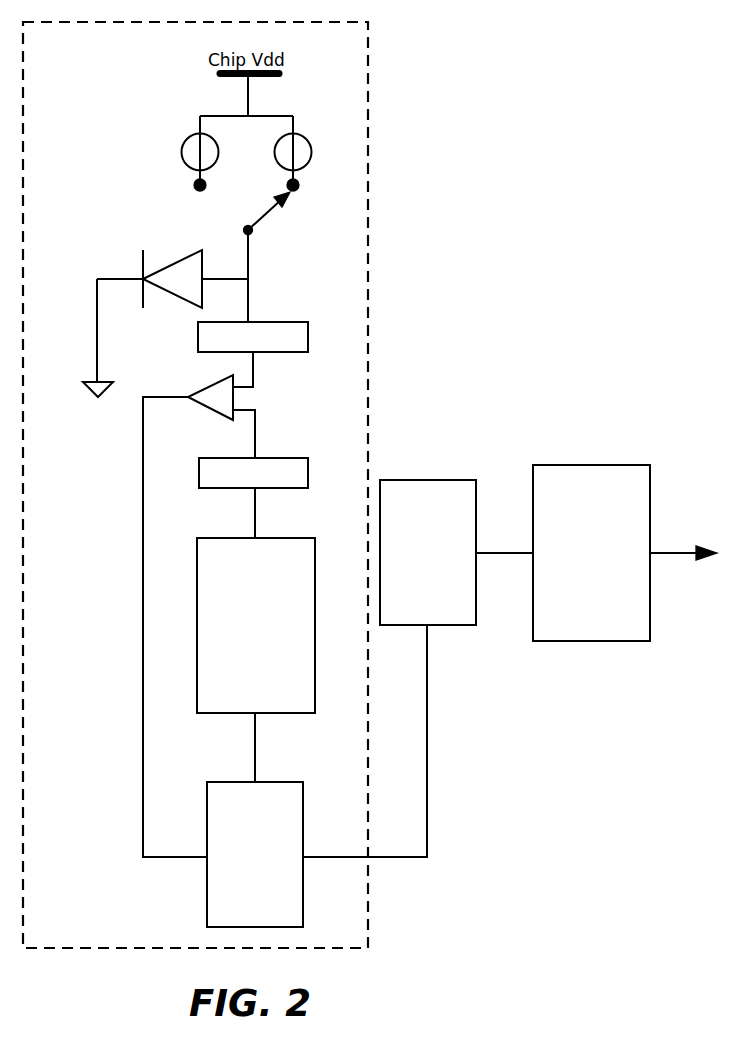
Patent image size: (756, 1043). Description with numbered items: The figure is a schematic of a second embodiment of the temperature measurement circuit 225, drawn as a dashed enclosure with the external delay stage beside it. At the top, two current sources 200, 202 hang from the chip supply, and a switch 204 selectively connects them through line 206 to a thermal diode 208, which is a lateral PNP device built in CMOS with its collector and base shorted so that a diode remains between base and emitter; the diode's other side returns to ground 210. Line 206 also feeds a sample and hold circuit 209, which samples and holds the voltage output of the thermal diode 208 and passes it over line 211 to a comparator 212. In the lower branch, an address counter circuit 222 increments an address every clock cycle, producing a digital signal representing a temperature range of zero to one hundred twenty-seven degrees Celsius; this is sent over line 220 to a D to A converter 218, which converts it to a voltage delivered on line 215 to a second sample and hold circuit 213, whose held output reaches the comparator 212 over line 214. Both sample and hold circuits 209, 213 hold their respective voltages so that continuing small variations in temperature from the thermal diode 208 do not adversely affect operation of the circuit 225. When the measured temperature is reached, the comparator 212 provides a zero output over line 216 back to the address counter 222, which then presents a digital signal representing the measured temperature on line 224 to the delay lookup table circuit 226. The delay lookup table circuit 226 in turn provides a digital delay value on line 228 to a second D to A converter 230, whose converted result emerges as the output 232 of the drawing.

The current source 200 is at (179, 155).
The current source 202 is at (300, 153).
The switch 204 is at (265, 218).
The line 206 is at (253, 268).
The thermal diode 208 is at (167, 262).
The sample and hold circuit 209 is at (308, 333).
The ground 210 is at (92, 335).
The sample/hold output line 211 is at (253, 372).
The comparator 212 is at (200, 387).
The second sample and hold circuit 213 is at (308, 462).
The amplifier output line 214 is at (255, 433).
The line 215 is at (255, 510).
The line 216 is at (143, 583).
The D to A converter 218 is at (256, 625).
The line 220 is at (255, 733).
The address counter circuit 222 is at (255, 854).
The line 224 is at (427, 688).
The temperature measurement circuit 225 is at (195, 485).
The delay lookup table circuit 226 is at (428, 552).
The line 228 is at (512, 555).
The D to A converter 230 is at (591, 553).
The output signal 232 is at (665, 556).